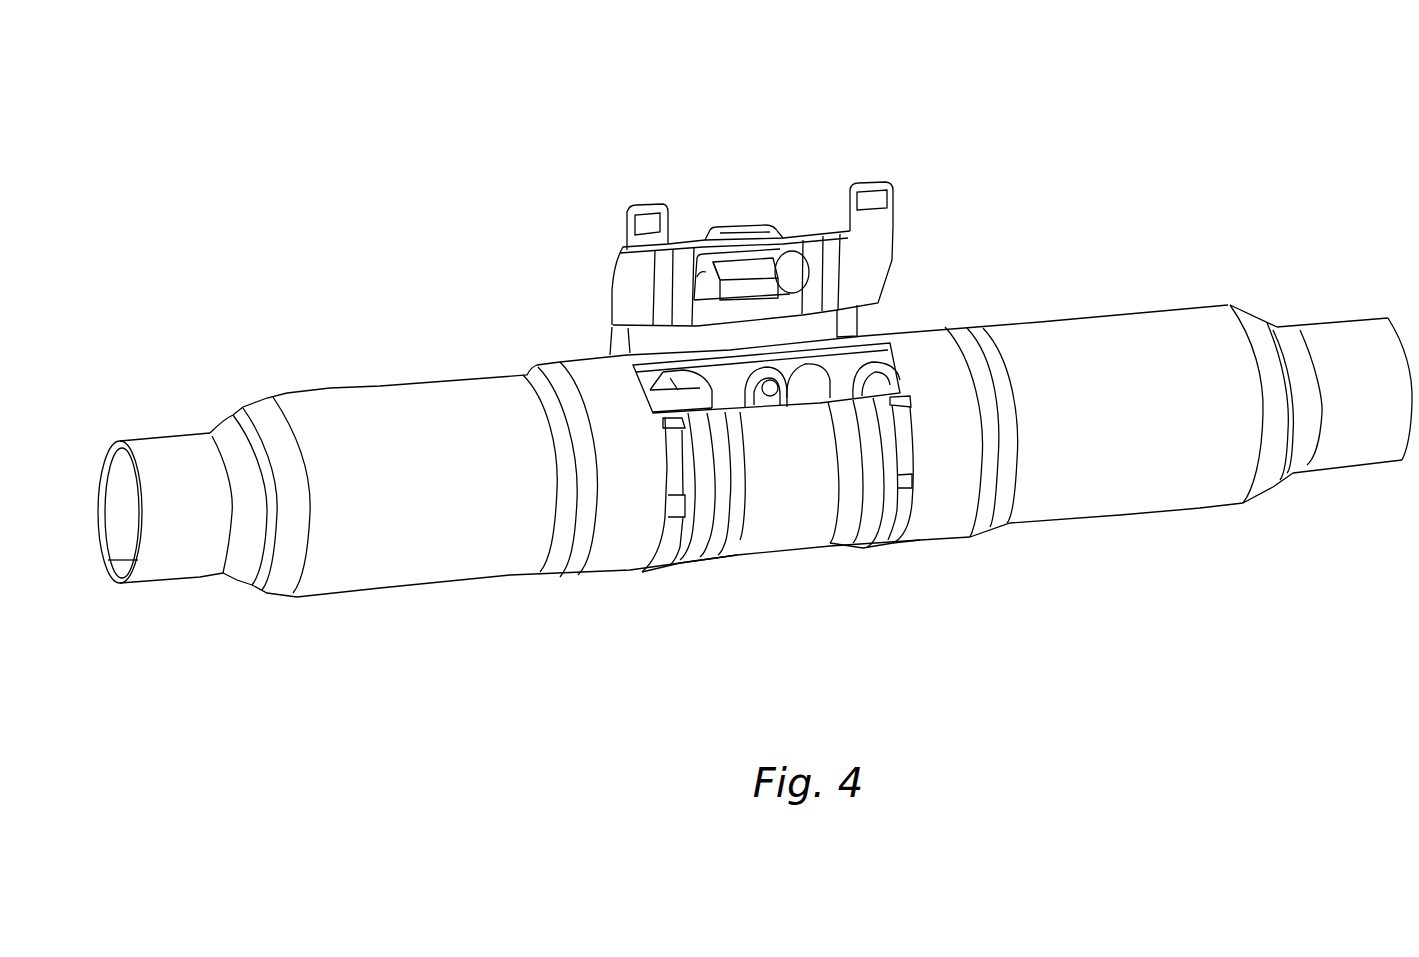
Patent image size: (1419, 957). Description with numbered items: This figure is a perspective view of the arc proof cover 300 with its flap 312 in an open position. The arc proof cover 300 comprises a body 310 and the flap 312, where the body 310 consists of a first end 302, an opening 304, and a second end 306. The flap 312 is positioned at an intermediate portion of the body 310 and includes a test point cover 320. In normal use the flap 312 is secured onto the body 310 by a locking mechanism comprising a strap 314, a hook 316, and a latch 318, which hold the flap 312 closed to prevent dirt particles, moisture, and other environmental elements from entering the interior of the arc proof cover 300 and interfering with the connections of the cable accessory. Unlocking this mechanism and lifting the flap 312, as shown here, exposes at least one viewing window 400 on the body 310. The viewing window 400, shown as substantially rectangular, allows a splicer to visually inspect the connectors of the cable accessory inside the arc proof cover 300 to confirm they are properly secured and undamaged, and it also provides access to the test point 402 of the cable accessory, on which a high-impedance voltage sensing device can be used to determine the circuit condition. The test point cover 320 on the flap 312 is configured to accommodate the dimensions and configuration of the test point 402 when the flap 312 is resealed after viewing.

The arc proof cover 300 is at (827, 28).
The first end 302 is at (175, 418).
The opening 304 is at (122, 583).
The second end 306 is at (1342, 318).
The body 310 is at (411, 378).
The flap 312 is at (612, 283).
The strap 314 is at (663, 572).
The hook 316 is at (667, 425).
The latch 318 is at (623, 235).
The test point cover 320 is at (740, 225).
The viewing window 400 is at (886, 346).
The test point 402 is at (771, 394).